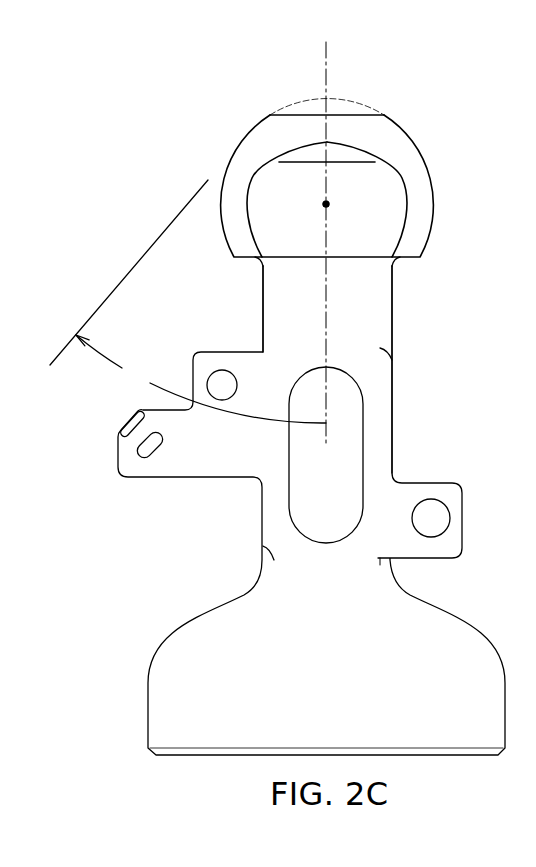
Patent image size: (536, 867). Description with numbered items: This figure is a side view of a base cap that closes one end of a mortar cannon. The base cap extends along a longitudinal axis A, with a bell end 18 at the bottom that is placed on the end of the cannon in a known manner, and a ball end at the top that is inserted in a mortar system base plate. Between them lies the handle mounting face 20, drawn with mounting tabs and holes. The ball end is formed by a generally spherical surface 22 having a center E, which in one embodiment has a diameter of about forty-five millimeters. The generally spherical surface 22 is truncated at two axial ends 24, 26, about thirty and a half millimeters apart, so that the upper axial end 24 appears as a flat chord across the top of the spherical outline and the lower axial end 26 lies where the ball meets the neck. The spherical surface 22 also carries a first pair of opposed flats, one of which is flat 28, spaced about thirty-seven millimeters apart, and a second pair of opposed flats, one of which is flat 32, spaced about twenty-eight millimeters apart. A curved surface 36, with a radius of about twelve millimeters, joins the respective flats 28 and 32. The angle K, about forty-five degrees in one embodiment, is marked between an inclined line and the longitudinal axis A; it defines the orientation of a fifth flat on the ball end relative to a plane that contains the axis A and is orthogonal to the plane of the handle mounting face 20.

The bell end 18 is at (104, 648).
The handle mounting face 20 is at (178, 465).
The generally spherical surface 22 is at (427, 172).
The truncated axial end 24 is at (350, 115).
The truncated axial end 26 is at (396, 256).
The flat of first pair of opposed flats 28 is at (347, 148).
The flat of second pair of opposed flats 32 is at (362, 248).
The curved surface 36 is at (248, 190).
The longitudinal axis A is at (325, 232).
The center E is at (324, 205).
The angle K is at (188, 301).